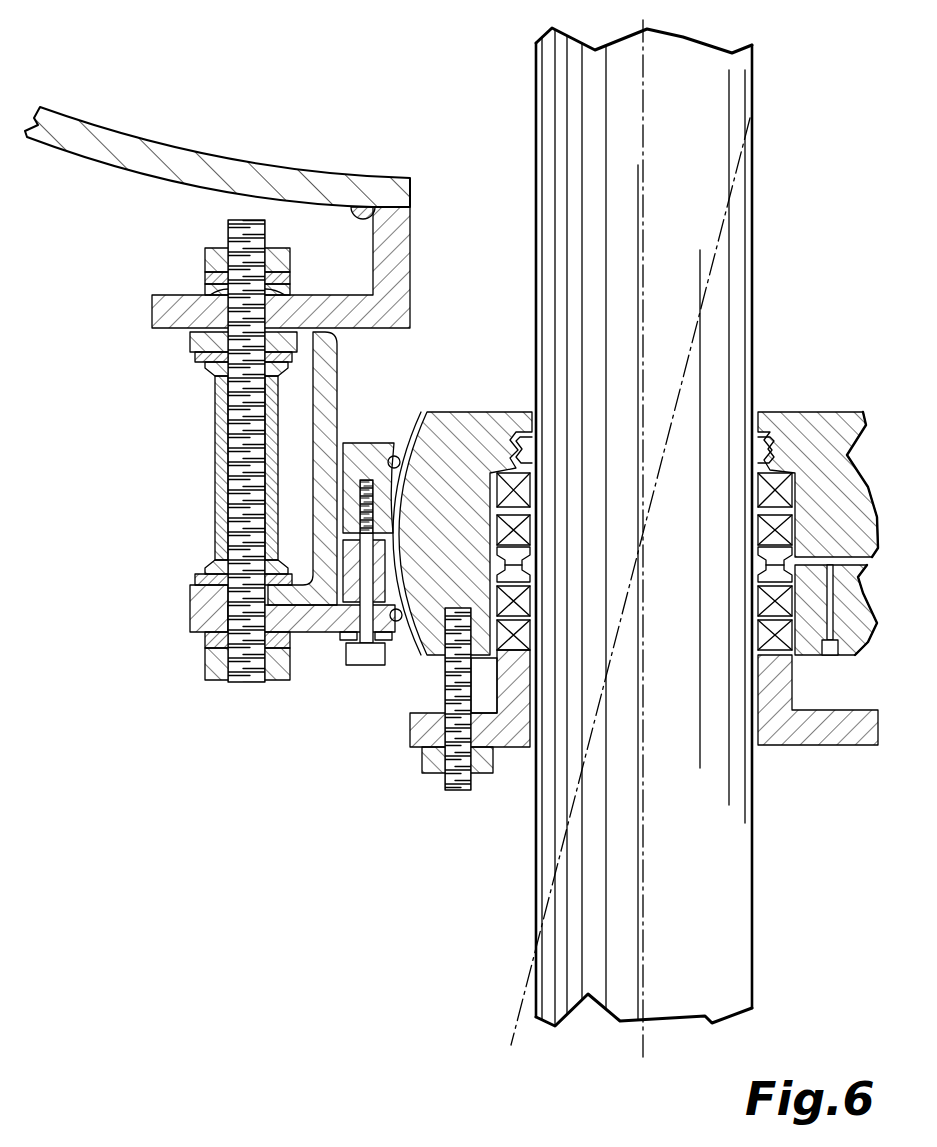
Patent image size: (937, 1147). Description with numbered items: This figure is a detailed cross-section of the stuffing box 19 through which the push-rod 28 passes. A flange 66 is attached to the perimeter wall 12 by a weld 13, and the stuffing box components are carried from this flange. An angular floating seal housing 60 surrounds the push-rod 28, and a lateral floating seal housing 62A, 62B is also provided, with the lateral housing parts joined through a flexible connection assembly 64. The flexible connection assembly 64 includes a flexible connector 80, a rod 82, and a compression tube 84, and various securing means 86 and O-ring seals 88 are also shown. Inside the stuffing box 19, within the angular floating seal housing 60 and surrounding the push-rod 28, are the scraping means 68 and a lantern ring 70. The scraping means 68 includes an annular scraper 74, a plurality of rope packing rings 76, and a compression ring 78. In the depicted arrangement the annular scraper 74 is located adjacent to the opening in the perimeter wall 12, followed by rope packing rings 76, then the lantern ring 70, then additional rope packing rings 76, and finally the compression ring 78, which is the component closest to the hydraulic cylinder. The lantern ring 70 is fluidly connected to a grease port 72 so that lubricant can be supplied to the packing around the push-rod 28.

The perimeter wall 12 is at (95, 152).
The weld 13 is at (353, 215).
The stuffing box 19 is at (267, 770).
The push-rod 28 is at (707, 902).
The angular floating seal housing 60 is at (478, 425).
The lateral floating seal housing 62A is at (363, 462).
The lateral floating seal housing 62B is at (303, 618).
The flexible connection assembly 64 is at (168, 476).
The flange 66 is at (380, 275).
The scraping means 68 is at (518, 404).
The lantern ring 70 is at (778, 550).
The grease port 72 is at (829, 657).
The scraper 74 is at (775, 482).
The rope packing rings 76 is at (867, 427).
The compression ring 78 is at (518, 735).
The flexible connector 80 is at (322, 382).
The rod 82 is at (250, 672).
The compression tube 84 is at (215, 537).
The securing means 86 is at (195, 272).
The O-ring seals 88 is at (396, 455).